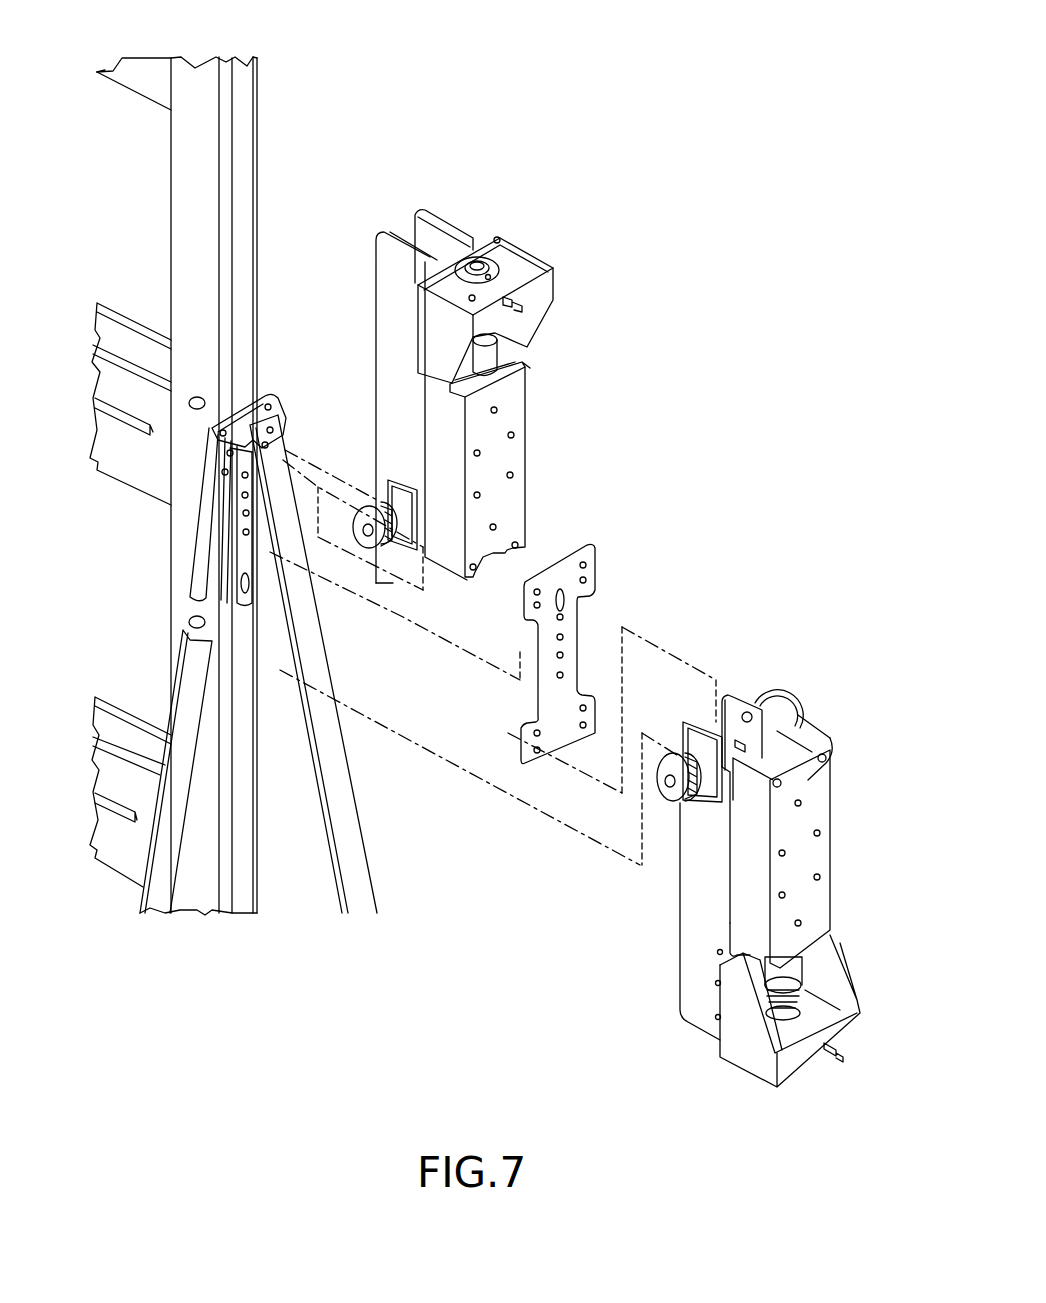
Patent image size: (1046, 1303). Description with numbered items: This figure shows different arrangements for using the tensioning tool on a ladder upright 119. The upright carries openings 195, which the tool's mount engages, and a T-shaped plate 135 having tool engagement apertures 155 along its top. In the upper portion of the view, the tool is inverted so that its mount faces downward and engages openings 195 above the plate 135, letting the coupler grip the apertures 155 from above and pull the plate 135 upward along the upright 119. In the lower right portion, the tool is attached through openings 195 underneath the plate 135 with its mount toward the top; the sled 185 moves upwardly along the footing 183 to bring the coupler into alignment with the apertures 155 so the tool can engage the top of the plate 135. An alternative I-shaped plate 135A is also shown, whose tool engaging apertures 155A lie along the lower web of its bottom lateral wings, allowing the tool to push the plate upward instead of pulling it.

The ladder upright 119 is at (212, 88).
The openings 195 is at (197, 397).
The plate 135 is at (272, 392).
The tool engagement apertures 155 is at (283, 405).
The plate 135A is at (580, 540).
The tool engaging apertures 155A is at (533, 762).
The sled 185 is at (815, 845).
The footing 183 is at (698, 1003).